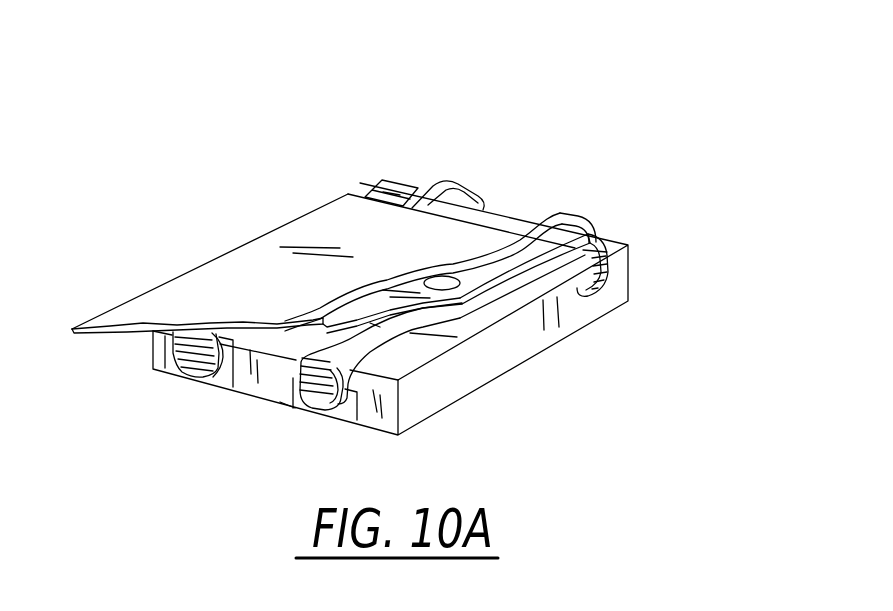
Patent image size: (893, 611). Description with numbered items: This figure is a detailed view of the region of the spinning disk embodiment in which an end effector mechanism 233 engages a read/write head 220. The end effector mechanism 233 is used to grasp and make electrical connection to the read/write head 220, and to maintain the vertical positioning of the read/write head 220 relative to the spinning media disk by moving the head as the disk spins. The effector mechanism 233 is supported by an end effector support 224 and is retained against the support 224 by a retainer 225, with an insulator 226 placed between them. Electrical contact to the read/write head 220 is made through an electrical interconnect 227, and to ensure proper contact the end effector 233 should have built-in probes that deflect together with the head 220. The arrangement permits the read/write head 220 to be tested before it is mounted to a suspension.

The read/write head 220 is at (538, 329).
The end effector support 224 is at (297, 248).
The retainer 225 is at (604, 286).
The insulator 226 is at (524, 250).
The electrical interconnect 227 is at (305, 390).
The end effector mechanism 233 is at (339, 172).